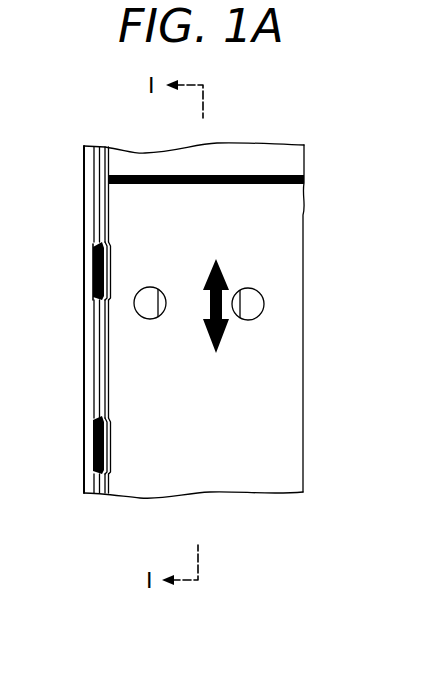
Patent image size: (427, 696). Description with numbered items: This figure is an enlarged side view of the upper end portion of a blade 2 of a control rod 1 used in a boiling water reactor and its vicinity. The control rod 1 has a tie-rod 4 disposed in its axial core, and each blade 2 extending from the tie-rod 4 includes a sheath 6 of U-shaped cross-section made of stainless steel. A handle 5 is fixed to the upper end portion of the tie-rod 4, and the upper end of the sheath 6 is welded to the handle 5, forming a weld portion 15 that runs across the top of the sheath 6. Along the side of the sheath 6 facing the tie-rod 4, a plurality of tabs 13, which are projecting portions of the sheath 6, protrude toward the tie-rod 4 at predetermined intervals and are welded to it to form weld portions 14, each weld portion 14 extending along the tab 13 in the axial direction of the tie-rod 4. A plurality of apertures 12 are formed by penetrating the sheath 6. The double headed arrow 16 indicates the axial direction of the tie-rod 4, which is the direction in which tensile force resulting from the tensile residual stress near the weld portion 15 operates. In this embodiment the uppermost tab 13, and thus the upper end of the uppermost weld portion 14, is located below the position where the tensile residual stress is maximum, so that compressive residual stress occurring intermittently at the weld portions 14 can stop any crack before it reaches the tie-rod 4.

The control rod 1 is at (252, 512).
The blade 2 is at (303, 476).
The tie-rod 4 is at (88, 170).
The handle 5 is at (295, 160).
The sheath 6 is at (290, 281).
The aperture 12 is at (264, 306).
The tab 13 is at (104, 262).
The weld portion 14 is at (93, 290).
The weld portion 15 is at (268, 176).
The double headed arrow 16 is at (224, 335).